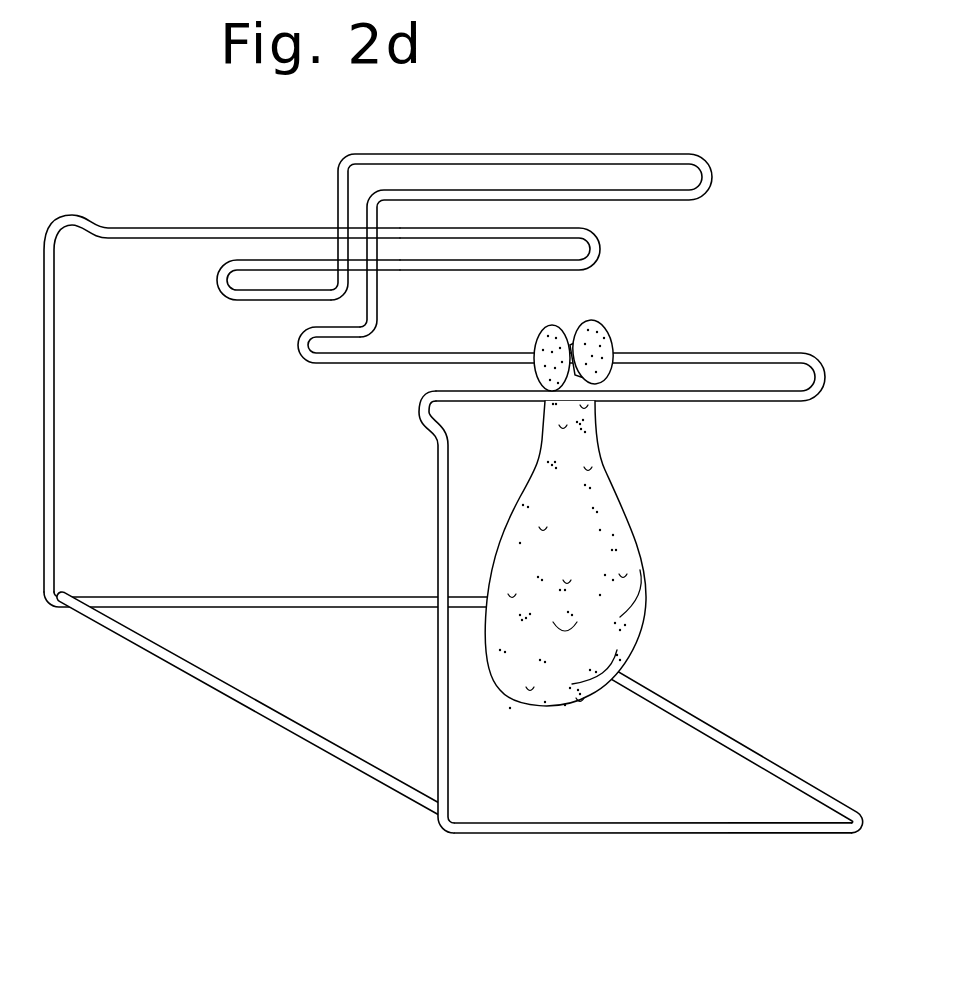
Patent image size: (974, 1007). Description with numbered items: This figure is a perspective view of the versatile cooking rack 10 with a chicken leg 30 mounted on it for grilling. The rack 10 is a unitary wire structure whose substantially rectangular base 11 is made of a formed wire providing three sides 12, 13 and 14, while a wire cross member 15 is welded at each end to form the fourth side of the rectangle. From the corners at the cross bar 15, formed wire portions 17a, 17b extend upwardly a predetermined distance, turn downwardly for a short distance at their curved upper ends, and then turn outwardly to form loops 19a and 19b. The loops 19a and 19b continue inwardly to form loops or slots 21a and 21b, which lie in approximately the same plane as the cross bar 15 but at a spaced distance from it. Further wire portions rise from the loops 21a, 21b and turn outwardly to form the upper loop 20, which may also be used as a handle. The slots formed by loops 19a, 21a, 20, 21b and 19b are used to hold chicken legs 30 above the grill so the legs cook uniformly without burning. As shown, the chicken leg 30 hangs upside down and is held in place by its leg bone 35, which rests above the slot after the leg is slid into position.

The cooking rack 10 is at (557, 123).
The base 11 is at (763, 756).
The side of the base 12 is at (305, 597).
The side of the base 13 is at (825, 795).
The side of the base 14 is at (798, 835).
The wire cross member 15 is at (380, 772).
The formed wire portion 17a is at (55, 470).
The formed wire portion 17b is at (449, 470).
The loop 19a is at (557, 225).
The loop 19b is at (784, 403).
The loop 20 is at (712, 174).
The loop or slot 21a is at (216, 280).
The loop or slot 21b is at (298, 346).
The chicken leg 30 is at (644, 548).
The leg bone 35 is at (613, 337).